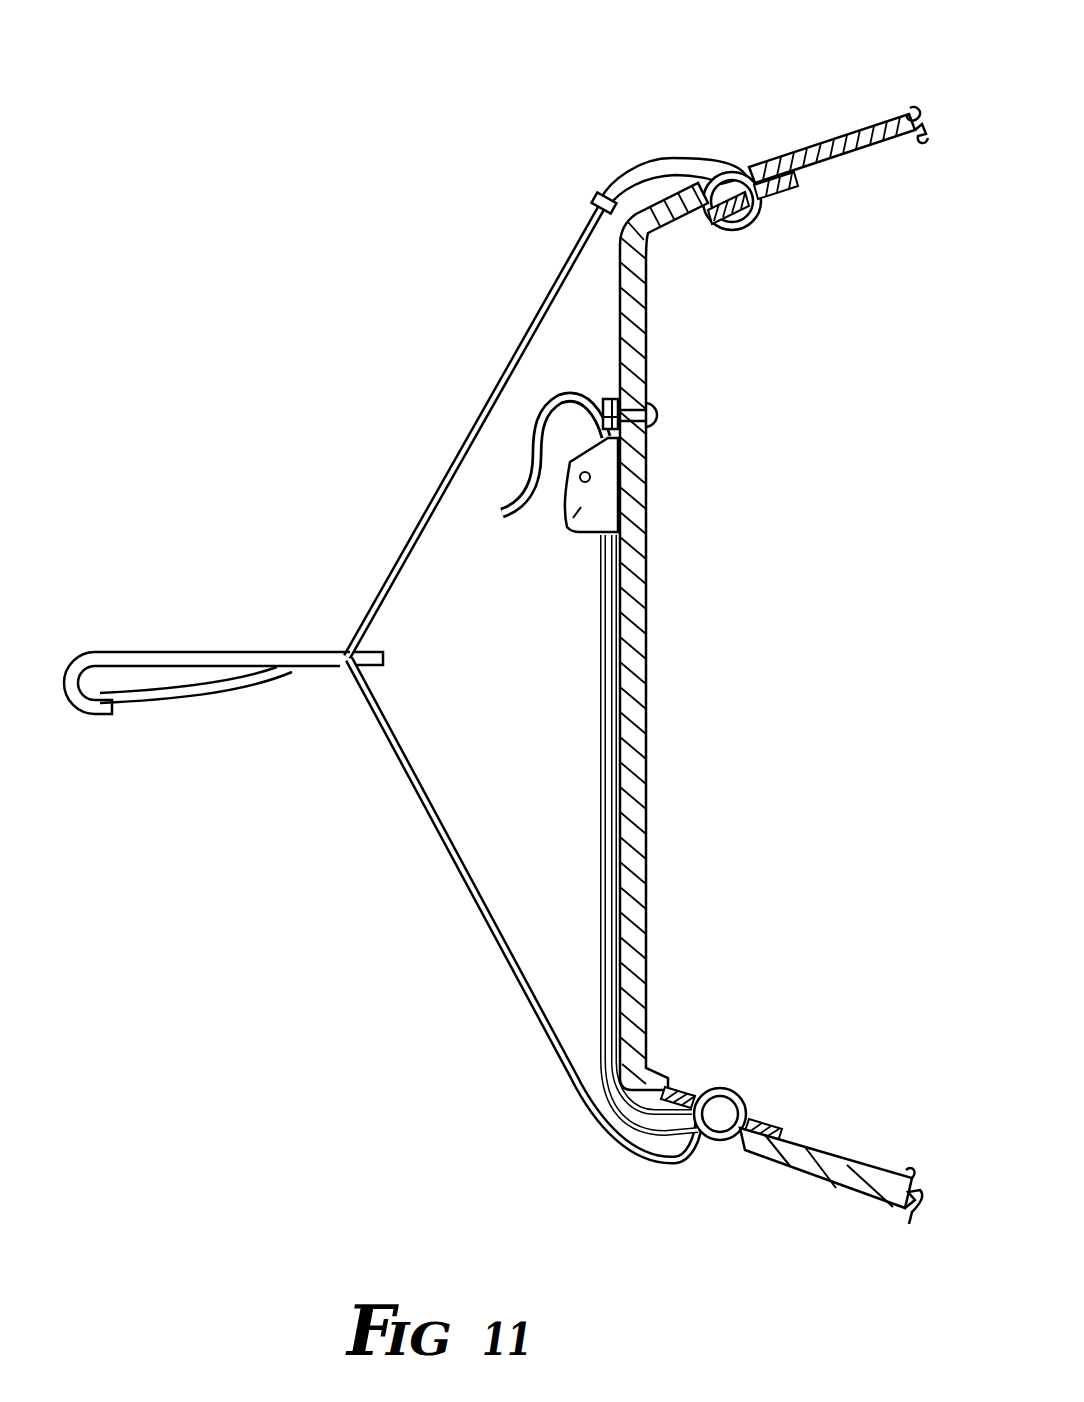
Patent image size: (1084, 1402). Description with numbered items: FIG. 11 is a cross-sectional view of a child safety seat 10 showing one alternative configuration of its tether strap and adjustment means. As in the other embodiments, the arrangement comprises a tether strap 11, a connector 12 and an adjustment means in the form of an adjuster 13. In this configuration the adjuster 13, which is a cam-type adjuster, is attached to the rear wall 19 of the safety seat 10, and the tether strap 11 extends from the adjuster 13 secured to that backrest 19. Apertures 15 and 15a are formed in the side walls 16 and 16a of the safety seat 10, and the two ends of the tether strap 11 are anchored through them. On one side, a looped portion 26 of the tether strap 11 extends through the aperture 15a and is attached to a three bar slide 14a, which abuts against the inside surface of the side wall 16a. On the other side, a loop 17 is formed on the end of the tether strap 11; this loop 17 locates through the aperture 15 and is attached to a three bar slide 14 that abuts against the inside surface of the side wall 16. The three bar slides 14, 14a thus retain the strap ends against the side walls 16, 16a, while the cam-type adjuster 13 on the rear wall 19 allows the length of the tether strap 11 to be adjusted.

The safety seat 10 is at (420, 583).
The tether strap 11 is at (402, 775).
The connector 12 is at (163, 650).
The adjuster 13 is at (577, 516).
The three bar slide 14 is at (790, 198).
The three bar slide 14a is at (770, 1122).
The aperture 15 is at (746, 162).
The aperture 15a is at (715, 1178).
The side wall 16 is at (838, 134).
The side wall 16a is at (838, 1176).
The loop 17 is at (742, 232).
The rear wall 19 is at (637, 775).
The looped portion 26 is at (727, 1090).